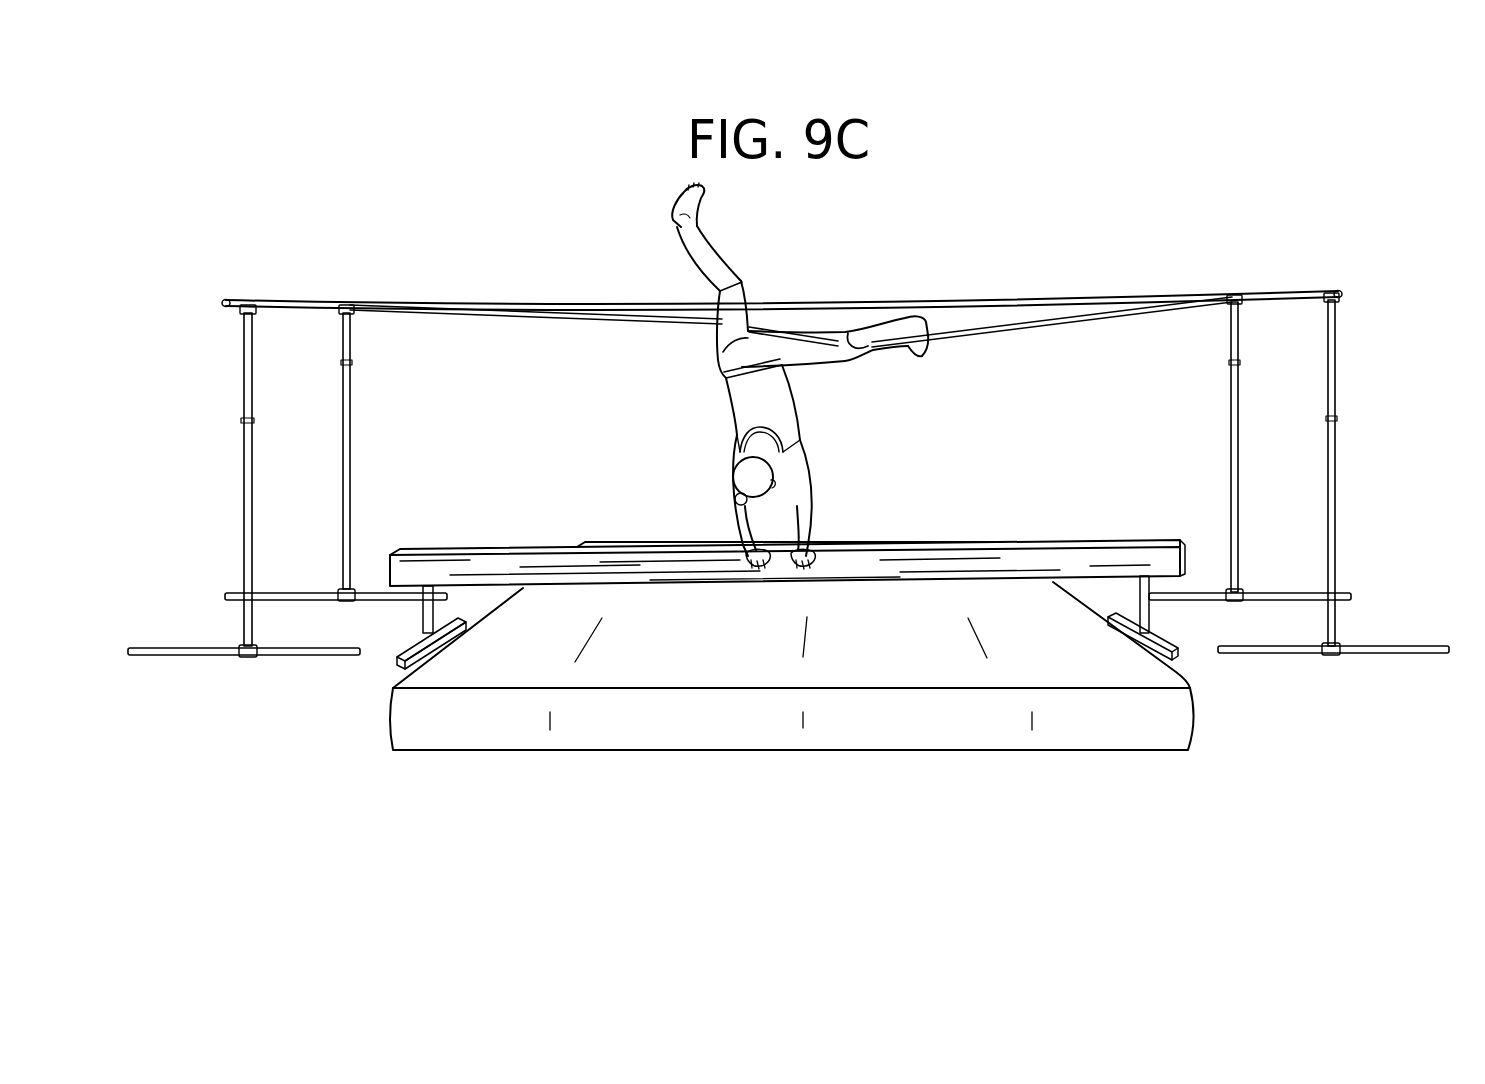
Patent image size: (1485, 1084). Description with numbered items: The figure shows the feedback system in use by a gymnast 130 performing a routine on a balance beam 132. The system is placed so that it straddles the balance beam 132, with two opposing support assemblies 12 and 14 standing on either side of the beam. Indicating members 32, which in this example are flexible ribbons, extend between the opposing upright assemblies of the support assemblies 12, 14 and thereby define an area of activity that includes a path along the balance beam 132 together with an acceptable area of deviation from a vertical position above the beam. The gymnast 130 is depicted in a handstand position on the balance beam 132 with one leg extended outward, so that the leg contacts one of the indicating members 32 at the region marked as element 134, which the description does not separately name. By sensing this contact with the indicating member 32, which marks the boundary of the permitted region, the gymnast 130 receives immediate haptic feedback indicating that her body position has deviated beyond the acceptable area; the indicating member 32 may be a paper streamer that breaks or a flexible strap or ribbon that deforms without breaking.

The support assembly 12 is at (192, 449).
The support assembly 14 is at (1342, 451).
The indicating member 32 is at (1190, 294).
The gymnast 130 is at (702, 261).
The balance beam 132 is at (1047, 556).
The harness pad 134 is at (870, 334).